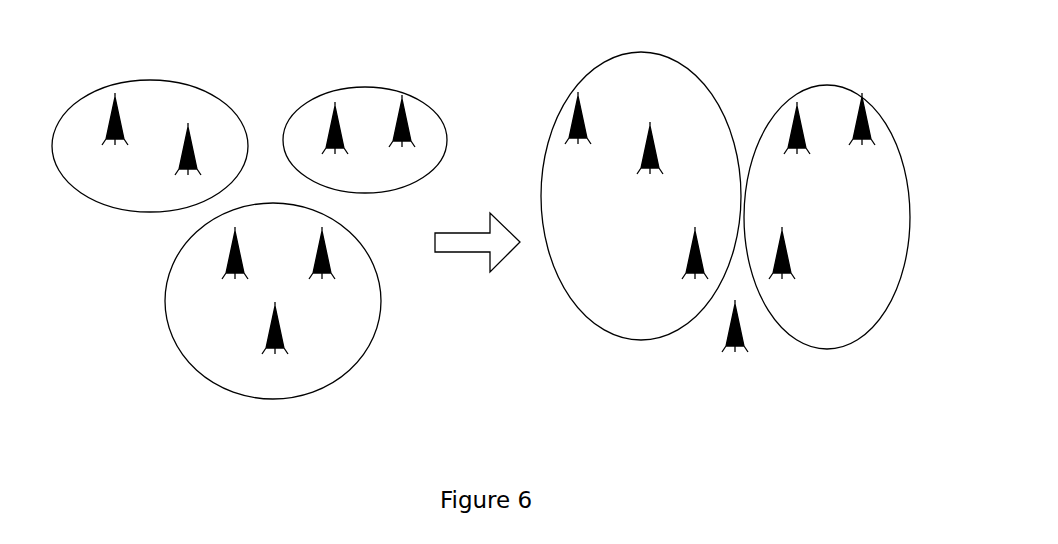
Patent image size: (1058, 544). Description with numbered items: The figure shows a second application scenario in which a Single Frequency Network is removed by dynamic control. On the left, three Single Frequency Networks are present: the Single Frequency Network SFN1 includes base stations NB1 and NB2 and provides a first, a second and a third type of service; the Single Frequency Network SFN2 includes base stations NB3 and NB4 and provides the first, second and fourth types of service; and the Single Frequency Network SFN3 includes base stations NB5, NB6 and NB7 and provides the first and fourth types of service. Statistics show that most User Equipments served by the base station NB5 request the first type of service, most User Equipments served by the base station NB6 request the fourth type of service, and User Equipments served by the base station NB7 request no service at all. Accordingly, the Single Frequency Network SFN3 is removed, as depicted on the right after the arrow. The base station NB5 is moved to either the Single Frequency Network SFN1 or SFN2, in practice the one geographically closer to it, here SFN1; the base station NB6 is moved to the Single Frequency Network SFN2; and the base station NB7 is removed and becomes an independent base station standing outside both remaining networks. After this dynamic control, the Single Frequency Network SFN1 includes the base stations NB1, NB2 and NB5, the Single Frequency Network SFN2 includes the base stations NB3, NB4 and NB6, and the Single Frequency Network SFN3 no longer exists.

The Single Frequency Network SFN1 is at (204, 82).
The Single Frequency Network SFN2 is at (412, 86).
The Single Frequency Network SFN3 is at (364, 234).
The base station NB1 is at (350, 134).
The base station NB2 is at (418, 156).
The base station NB3 is at (570, 138).
The base station NB4 is at (639, 130).
The base station NB5 is at (464, 268).
The base station NB6 is at (554, 268).
The base station NB7 is at (504, 342).